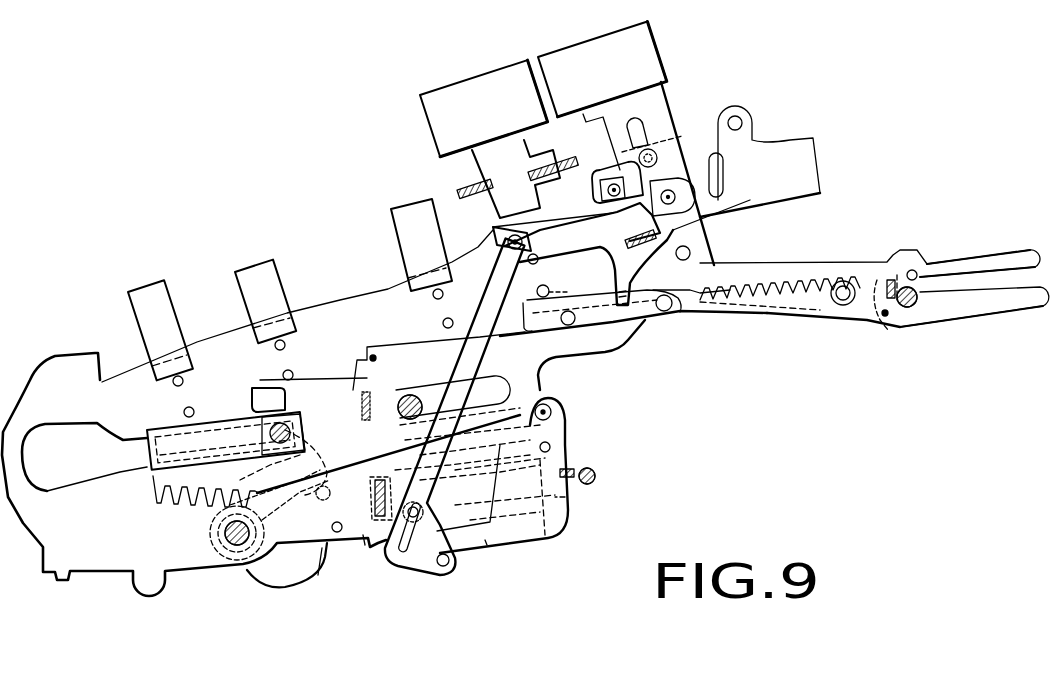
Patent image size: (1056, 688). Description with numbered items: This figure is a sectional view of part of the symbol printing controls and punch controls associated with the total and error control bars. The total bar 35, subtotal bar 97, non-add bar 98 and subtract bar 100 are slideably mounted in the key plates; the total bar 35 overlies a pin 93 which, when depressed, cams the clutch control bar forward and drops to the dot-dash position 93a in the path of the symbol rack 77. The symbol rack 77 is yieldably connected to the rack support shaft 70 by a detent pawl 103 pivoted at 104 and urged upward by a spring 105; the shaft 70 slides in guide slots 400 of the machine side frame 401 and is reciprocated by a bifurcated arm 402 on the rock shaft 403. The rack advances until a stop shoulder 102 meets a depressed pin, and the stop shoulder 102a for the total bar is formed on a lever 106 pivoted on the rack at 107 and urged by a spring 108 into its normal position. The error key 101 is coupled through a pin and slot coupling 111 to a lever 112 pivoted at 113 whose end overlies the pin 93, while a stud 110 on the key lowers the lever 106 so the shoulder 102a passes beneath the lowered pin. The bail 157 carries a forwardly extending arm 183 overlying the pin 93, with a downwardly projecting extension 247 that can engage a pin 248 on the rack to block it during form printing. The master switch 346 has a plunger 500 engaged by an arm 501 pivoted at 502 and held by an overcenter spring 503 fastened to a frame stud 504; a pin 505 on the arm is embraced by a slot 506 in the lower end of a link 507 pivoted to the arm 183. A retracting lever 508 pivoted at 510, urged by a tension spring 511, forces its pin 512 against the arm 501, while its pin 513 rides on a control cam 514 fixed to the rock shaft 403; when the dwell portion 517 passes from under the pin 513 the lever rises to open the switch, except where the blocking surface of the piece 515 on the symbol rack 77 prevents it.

The total bar 35 is at (488, 83).
The error key 101 is at (660, 58).
The pin and slot coupling 111 is at (610, 175).
The lever 112 is at (601, 182).
The forwardly extending arm 183 is at (580, 200).
The pivot 113 is at (700, 180).
The bail 157 is at (700, 210).
The stud 110 is at (708, 215).
The lever 106 is at (790, 270).
The pivot 107 is at (843, 307).
The spring 108 is at (880, 313).
The symbol rack 77 is at (727, 313).
The downwardly projecting extension 247 is at (617, 323).
The pin 248 is at (667, 313).
The stop shoulder 102a is at (638, 347).
The stop shoulder 102 is at (363, 357).
The spring 105 is at (353, 387).
The pin 93 is at (529, 291).
The lowered pin position 93a is at (576, 291).
The link 507 is at (496, 275).
The subtotal bar 97 is at (415, 210).
The non-add bar 98 is at (263, 263).
The subtract bar 100 is at (152, 292).
The rack support shaft 70 is at (277, 390).
The detent pawl 103 is at (170, 430).
The bifurcated arm 402 is at (235, 444).
The guide slot 400 is at (127, 467).
The machine side frame 401 is at (117, 557).
The rock shaft 403 is at (237, 550).
The control cam 514 is at (273, 590).
The dwell portion 517 is at (318, 578).
The pivot 510 is at (334, 543).
The retracting lever 508 is at (360, 550).
The slot 506 is at (400, 560).
The pin 505 is at (410, 568).
The pin 512 is at (447, 567).
The piece 515 is at (487, 545).
The arm 501 is at (510, 545).
The pivot 502 is at (568, 498).
The overcenter spring 503 is at (578, 468).
The frame stud 504 is at (598, 476).
The pivot 104 is at (553, 447).
The master switch 346 is at (565, 420).
The plunger 500 is at (456, 455).
The tension spring 511 is at (331, 492).
The pin 513 is at (273, 533).